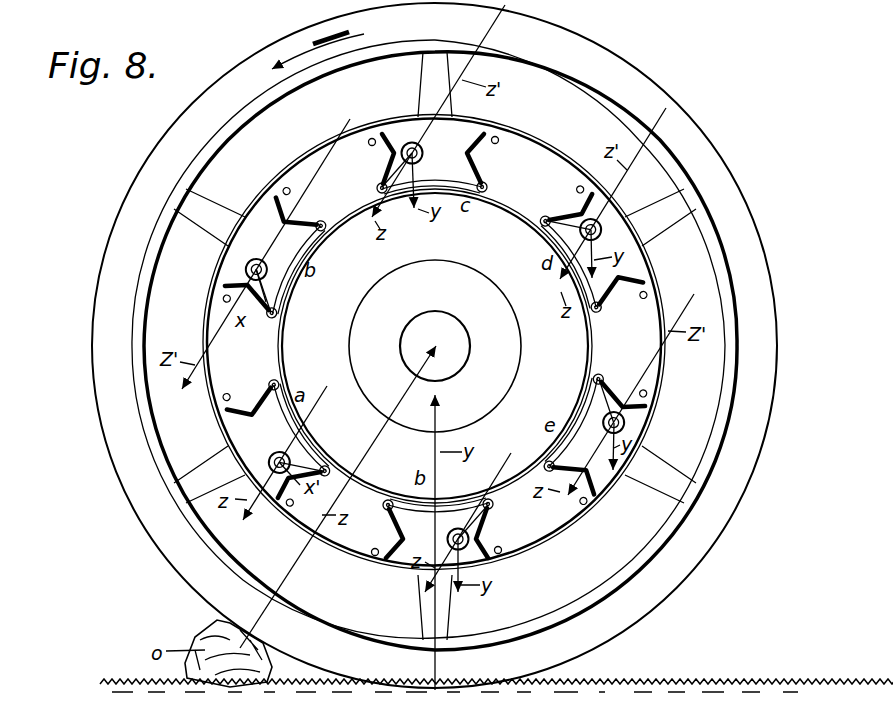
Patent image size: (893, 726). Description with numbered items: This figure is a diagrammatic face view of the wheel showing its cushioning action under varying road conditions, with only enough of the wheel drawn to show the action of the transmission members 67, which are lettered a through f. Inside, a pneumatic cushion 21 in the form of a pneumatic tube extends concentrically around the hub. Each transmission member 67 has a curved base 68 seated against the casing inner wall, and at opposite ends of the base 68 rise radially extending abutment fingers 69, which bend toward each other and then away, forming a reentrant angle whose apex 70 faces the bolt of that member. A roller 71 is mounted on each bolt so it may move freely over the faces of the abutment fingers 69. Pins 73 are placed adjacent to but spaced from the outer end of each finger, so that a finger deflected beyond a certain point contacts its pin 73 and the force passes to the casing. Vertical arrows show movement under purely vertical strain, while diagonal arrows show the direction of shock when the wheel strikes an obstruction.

The pneumatic cushion 21 is at (364, 456).
The transmission member 67 is at (407, 163).
The base 68 is at (473, 192).
The abutment fingers 69 is at (483, 168).
The apex of the abutment finger 70 is at (462, 155).
The roller 71 is at (409, 145).
The pins or bolts 73 is at (498, 141).